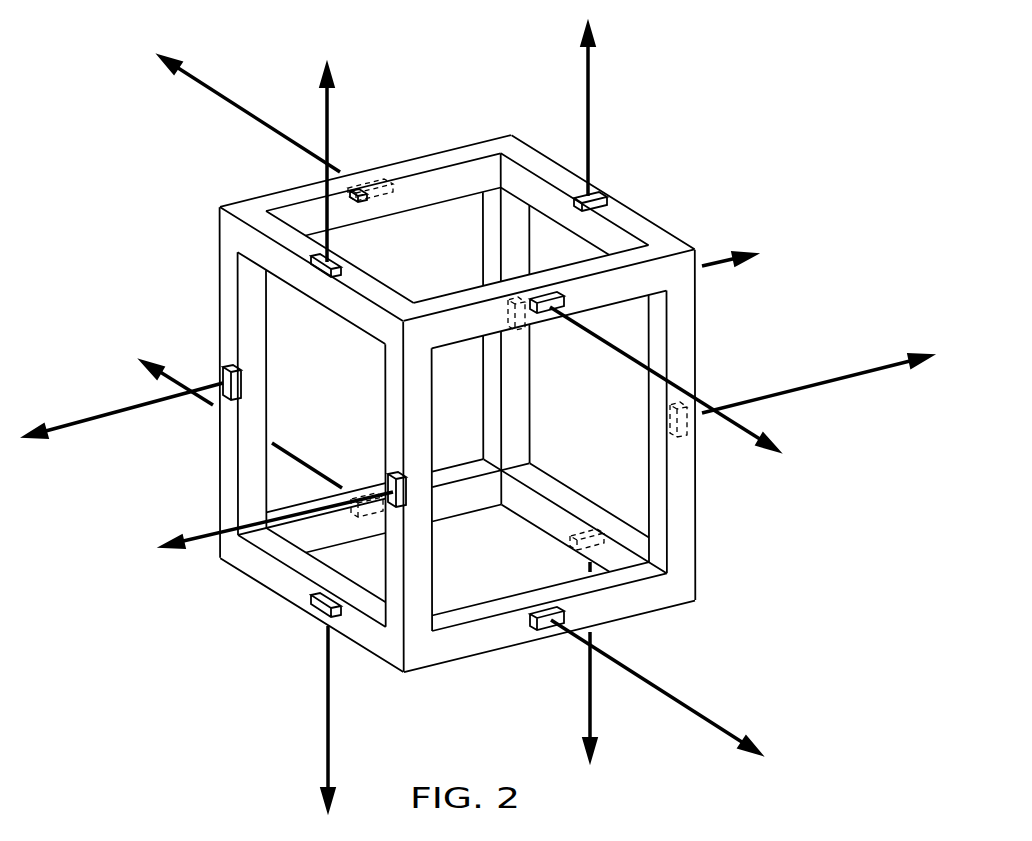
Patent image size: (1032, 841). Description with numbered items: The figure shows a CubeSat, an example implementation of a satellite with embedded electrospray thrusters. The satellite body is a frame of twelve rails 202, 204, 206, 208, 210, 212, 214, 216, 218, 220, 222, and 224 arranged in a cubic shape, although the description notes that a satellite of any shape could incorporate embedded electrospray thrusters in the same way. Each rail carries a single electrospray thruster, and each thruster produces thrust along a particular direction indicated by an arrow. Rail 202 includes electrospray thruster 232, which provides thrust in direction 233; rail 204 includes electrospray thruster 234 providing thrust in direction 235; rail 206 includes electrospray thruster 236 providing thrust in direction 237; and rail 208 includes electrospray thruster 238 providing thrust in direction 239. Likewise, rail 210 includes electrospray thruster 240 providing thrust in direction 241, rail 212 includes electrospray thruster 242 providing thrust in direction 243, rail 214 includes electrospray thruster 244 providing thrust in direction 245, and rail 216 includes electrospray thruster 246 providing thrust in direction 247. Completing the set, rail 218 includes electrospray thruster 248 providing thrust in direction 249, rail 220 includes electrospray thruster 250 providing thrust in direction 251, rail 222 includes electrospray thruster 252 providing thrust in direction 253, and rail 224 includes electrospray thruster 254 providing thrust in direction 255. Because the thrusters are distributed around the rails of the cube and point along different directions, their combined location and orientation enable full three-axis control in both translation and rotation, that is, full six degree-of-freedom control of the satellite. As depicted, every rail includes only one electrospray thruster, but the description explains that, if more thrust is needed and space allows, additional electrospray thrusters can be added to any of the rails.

The rail 202 is at (459, 146).
The rail 204 is at (537, 148).
The rail 206 is at (672, 306).
The rail 208 is at (332, 312).
The rail 210 is at (530, 353).
The rail 212 is at (700, 500).
The rail 214 is at (435, 528).
The rail 216 is at (218, 447).
The rail 218 is at (572, 495).
The rail 220 is at (555, 478).
The rail 222 is at (647, 615).
The rail 224 is at (265, 585).
The electrospray thruster 232 is at (388, 168).
The direction 233 is at (250, 112).
The electrospray thruster 234 is at (612, 207).
The direction 235 is at (596, 104).
The electrospray thruster 236 is at (566, 303).
The direction 237 is at (747, 437).
The electrospray thruster 238 is at (342, 258).
The direction 239 is at (331, 103).
The electrospray thruster 240 is at (503, 302).
The direction 241 is at (713, 258).
The electrospray thruster 242 is at (675, 402).
The direction 243 is at (817, 383).
The electrospray thruster 244 is at (405, 478).
The direction 245 is at (202, 535).
The electrospray thruster 246 is at (245, 388).
The direction 247 is at (92, 417).
The electrospray thruster 248 is at (367, 487).
The direction 249 is at (185, 383).
The electrospray thruster 250 is at (560, 540).
The direction 251 is at (587, 708).
The electrospray thruster 252 is at (550, 633).
The direction 253 is at (686, 710).
The electrospray thruster 254 is at (313, 617).
The direction 255 is at (323, 738).